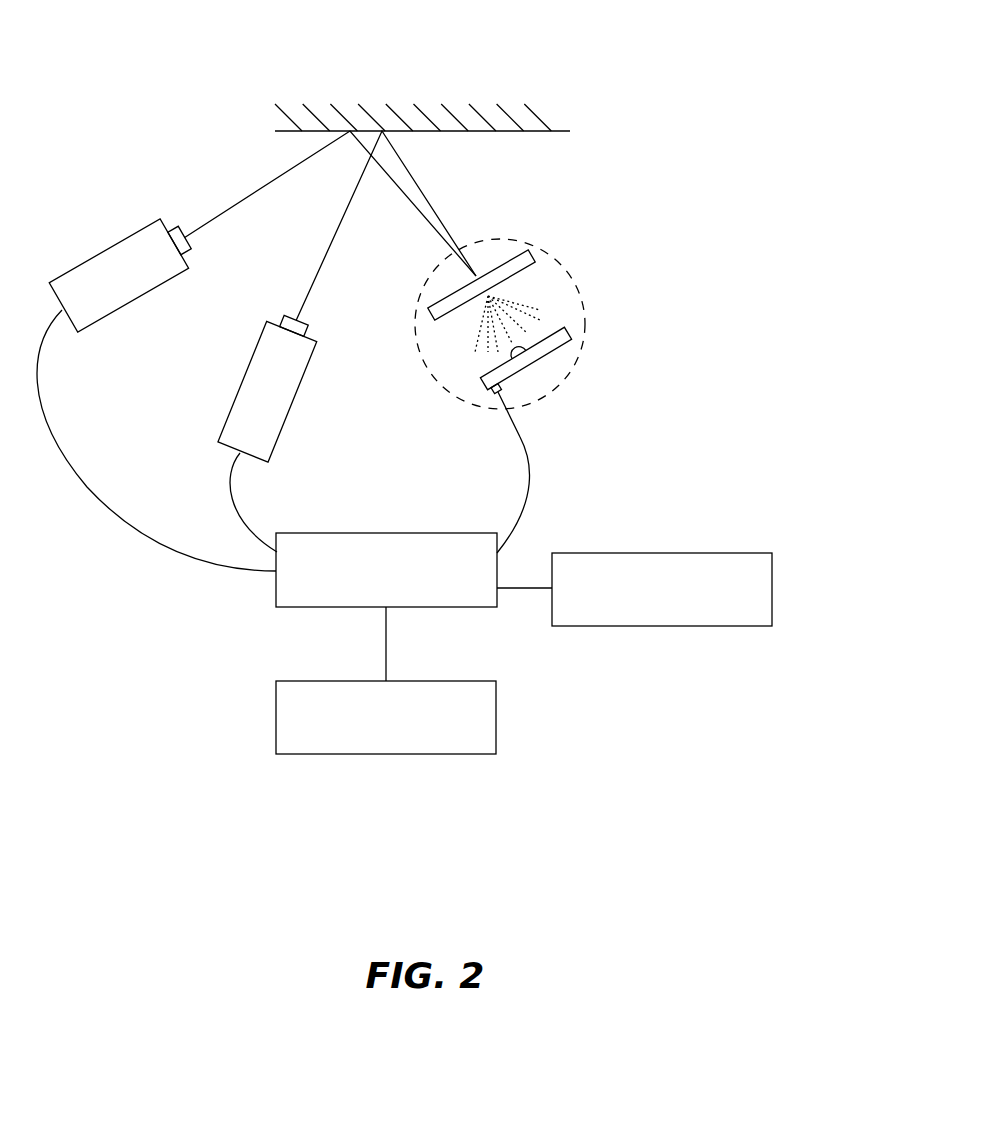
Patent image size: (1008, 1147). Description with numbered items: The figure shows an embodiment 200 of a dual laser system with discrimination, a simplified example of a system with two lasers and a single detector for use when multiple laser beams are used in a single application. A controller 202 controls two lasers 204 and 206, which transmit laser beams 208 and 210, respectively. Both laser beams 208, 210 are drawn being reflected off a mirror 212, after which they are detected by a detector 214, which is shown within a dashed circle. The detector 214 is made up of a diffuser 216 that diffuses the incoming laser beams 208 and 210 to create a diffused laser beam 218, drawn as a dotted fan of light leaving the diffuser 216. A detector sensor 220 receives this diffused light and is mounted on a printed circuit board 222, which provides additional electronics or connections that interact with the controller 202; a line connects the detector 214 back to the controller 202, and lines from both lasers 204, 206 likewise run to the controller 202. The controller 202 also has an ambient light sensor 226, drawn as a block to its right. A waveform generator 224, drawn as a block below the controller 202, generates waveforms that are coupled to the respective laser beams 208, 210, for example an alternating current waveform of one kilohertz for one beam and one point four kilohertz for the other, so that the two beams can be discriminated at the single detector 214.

The embodiment 200 is at (614, 801).
The controller 202 is at (385, 533).
The laser 204 is at (108, 248).
The laser 206 is at (238, 381).
The laser beam 208 is at (235, 205).
The laser beam 210 is at (310, 293).
The mirror 212 is at (368, 131).
The detector 214 is at (680, 409).
The diffuser 216 is at (490, 268).
The diffused laser beam 218 is at (522, 305).
The detector sensor 220 is at (527, 345).
The printed circuit board 222 is at (568, 337).
The waveform generator 224 is at (276, 718).
The ambient light sensor 226 is at (772, 593).